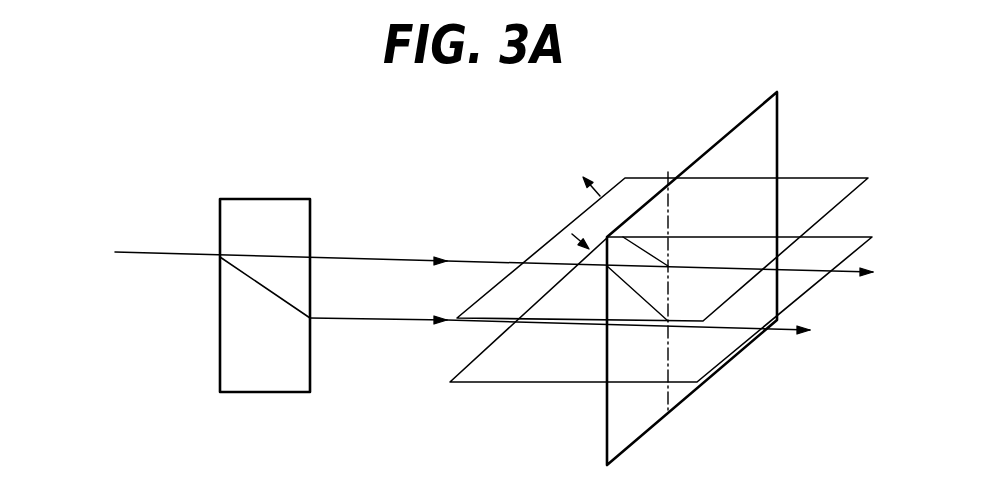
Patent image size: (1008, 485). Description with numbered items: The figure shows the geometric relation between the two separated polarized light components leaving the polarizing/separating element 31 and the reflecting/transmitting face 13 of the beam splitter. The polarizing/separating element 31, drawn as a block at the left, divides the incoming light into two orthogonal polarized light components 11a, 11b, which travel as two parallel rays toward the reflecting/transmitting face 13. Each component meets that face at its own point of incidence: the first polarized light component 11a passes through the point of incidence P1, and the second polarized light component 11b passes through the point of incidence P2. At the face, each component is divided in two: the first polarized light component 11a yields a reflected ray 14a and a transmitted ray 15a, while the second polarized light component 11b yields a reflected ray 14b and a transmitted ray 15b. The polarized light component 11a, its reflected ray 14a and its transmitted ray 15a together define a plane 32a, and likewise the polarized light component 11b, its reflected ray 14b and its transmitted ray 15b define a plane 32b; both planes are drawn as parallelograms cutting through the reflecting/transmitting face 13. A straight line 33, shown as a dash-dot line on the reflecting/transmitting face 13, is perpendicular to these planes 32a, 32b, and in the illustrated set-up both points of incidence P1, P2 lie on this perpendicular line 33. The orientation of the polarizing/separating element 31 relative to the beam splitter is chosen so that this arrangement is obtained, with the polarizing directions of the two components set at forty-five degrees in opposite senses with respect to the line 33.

The polarizing/separating element 31 is at (304, 198).
The polarized light component 11a is at (369, 258).
The polarized light component 11b is at (368, 321).
The reflecting/transmitting face 13 is at (736, 123).
The straight line 33 is at (673, 203).
The reflected ray 14a is at (622, 212).
The reflected ray 14b is at (586, 250).
The plane 32a is at (815, 177).
The plane 32b is at (527, 387).
The transmitted ray 15a is at (843, 275).
The transmitted ray 15b is at (783, 335).
The point of incidence P1 is at (672, 270).
The point of incidence P2 is at (668, 330).